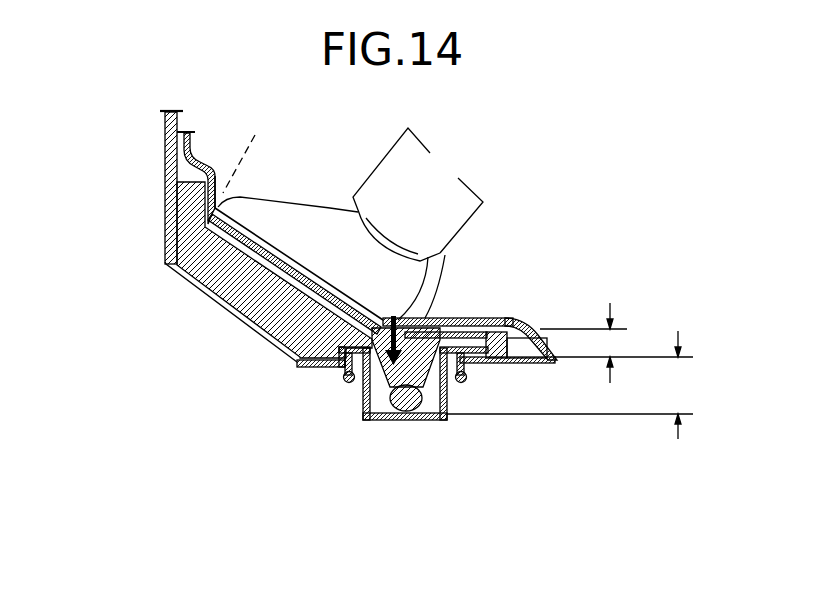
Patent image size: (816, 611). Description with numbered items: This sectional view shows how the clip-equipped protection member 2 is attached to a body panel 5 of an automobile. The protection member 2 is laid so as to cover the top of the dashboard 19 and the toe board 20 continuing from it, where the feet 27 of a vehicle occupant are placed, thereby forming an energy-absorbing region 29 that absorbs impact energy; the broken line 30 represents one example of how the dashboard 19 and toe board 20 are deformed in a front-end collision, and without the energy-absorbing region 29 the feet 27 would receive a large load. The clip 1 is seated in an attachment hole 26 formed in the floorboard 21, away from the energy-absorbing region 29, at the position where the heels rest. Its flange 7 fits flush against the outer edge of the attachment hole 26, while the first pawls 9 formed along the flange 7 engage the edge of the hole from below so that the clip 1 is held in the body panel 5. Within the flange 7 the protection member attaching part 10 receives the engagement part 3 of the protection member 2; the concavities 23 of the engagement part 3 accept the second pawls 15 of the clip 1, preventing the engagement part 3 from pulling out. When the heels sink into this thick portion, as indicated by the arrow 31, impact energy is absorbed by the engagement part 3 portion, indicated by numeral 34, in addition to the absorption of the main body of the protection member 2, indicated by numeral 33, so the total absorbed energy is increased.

The clip 1 is at (383, 428).
The protection member 2 is at (240, 318).
The engagement part 3 is at (472, 318).
The body panel 5 is at (534, 363).
The flange 7 is at (292, 358).
The first pawls 9 is at (340, 383).
The protection member attaching part 10 is at (444, 422).
The second pawls 15 is at (365, 385).
The dashboard 19 is at (168, 244).
The toe board 20 is at (195, 290).
The floorboard 21 is at (335, 365).
The concavities 23 is at (425, 390).
The attachment hole 26 is at (350, 383).
The feet 27 is at (320, 223).
The energy-absorbing region 29 is at (280, 234).
The broken line 30 is at (178, 278).
The pressing direction 31 is at (437, 283).
The impact energy absorption of the main body of the protection member 33 is at (616, 343).
The impact energy absorption of the engagement part portion 34 is at (658, 385).